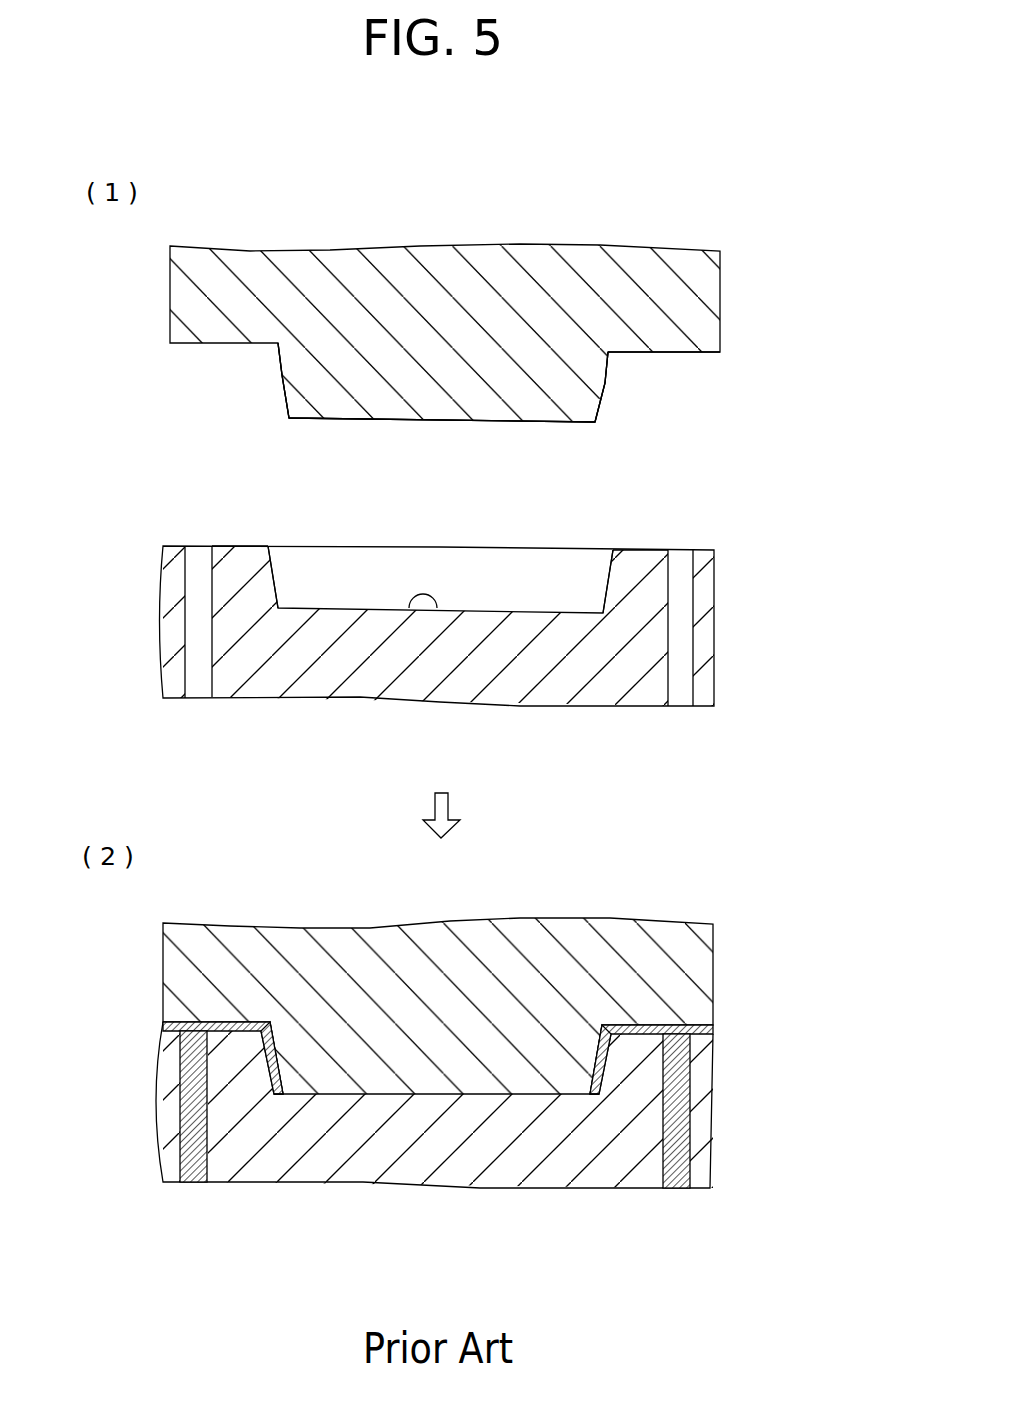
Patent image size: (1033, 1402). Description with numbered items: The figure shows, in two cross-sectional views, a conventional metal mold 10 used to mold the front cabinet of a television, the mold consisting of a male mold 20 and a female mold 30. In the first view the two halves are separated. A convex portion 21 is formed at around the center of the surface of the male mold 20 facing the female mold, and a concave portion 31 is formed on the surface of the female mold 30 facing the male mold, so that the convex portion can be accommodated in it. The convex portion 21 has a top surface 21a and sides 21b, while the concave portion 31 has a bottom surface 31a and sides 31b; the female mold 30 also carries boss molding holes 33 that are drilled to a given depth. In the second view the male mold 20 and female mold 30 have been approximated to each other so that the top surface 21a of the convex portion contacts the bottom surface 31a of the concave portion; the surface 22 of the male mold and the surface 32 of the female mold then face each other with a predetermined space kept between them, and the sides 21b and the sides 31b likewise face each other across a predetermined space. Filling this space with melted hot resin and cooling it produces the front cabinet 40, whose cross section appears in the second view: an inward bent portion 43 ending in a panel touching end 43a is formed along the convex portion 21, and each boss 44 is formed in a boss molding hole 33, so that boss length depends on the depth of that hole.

The metal mold 10 is at (183, 451).
The male mold 20 is at (400, 272).
The convex portion 21 is at (303, 402).
The top surface of the convex portion 21a is at (450, 422).
The sides of the convex portion 21b is at (282, 372).
The surface of the male mold 22 is at (668, 353).
The female mold 30 is at (602, 692).
The concave portion 31 is at (287, 553).
The bottom surface of the concave portion 31a is at (410, 603).
The sides of the concave portion 31b is at (273, 578).
The surface of the female mold 32 is at (647, 550).
The boss molding hole 33 is at (192, 568).
The front cabinet 40 is at (163, 1023).
The inward bent portion 43 is at (285, 1072).
The panel touching end 43a is at (273, 1093).
The boss 44 is at (195, 1182).